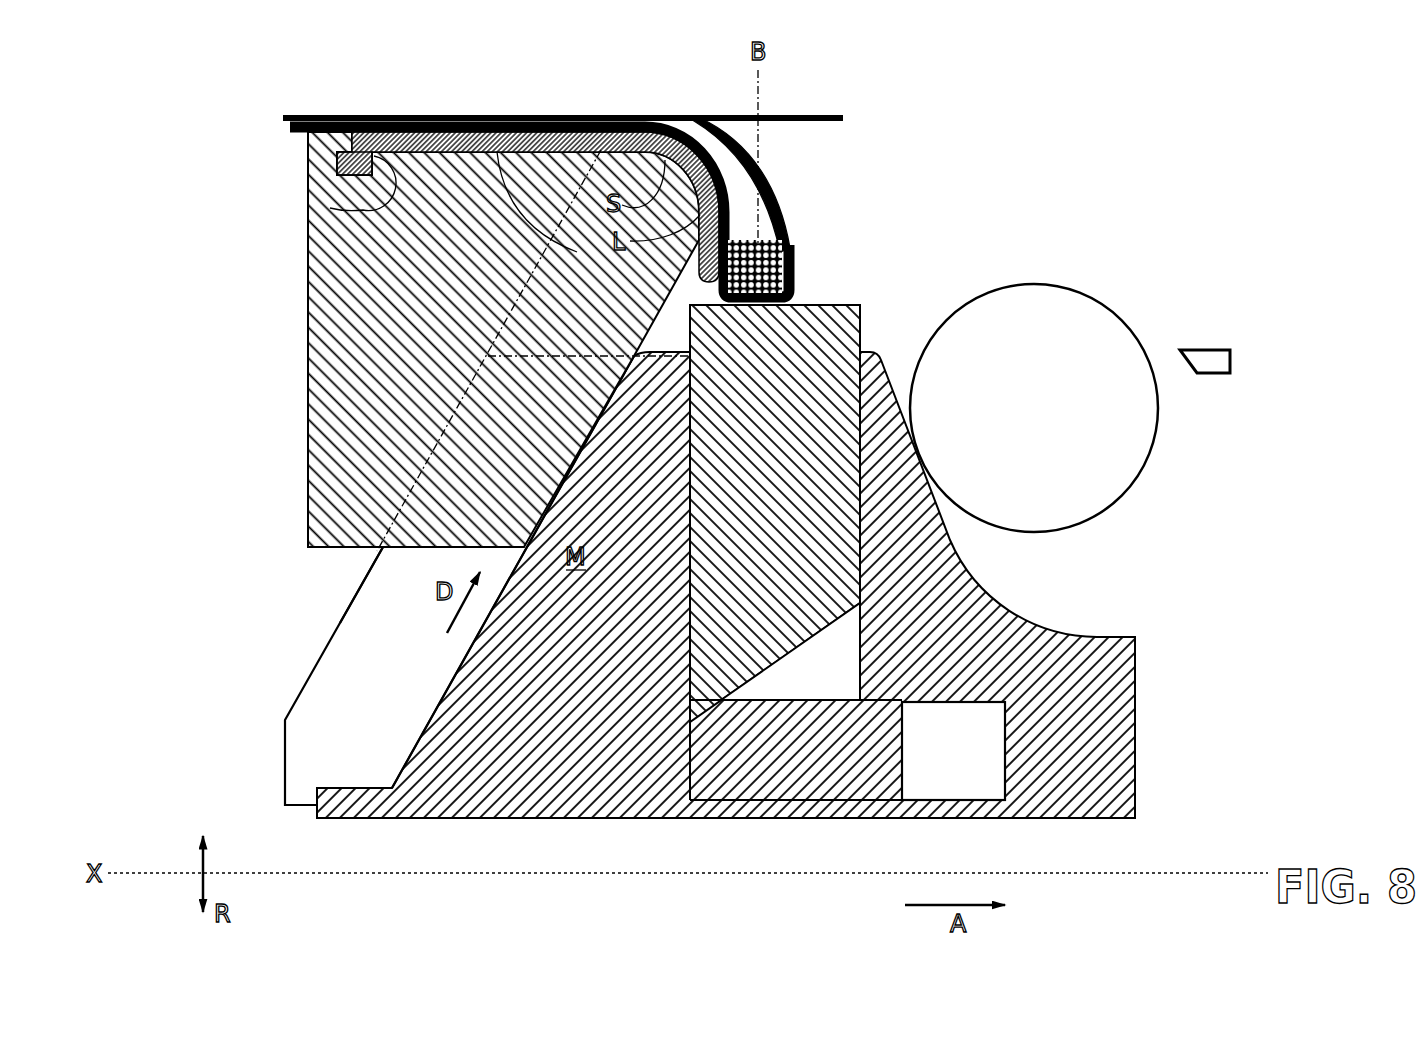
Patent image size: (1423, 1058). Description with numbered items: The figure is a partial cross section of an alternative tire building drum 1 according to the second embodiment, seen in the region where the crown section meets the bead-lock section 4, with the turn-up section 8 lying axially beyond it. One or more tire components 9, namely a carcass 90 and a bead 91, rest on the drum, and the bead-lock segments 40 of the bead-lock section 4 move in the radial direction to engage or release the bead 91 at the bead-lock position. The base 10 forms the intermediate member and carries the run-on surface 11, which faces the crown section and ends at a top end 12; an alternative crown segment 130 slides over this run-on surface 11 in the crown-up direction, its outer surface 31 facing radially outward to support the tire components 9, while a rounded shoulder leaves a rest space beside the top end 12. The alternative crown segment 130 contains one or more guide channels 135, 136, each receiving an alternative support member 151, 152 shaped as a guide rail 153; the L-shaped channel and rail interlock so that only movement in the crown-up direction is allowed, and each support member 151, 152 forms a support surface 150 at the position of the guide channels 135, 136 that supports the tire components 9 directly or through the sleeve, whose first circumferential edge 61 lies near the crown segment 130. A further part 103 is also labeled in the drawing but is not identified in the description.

The tire building drum 1 is at (1347, 98).
The bead-lock section 4 is at (858, 238).
The turn-up section 8 is at (1181, 238).
The tire components 9 is at (555, 114).
The base 10 is at (597, 800).
The run-on surface 11 is at (455, 668).
The top end 12 is at (660, 352).
The outer surface 31 is at (330, 208).
The bead-lock segments 40 is at (782, 608).
The first circumferential edge 61 is at (336, 173).
The carcass 90 is at (622, 118).
The bead 91 is at (777, 238).
The cable assembly 103 is at (786, 104).
The alternative crown segments 130 is at (332, 323).
The guide channel 135 is at (528, 171).
The guide channel 136 is at (497, 114).
The support surface 150 is at (640, 322).
The alternative support member 151 is at (252, 676).
The alternative support member 152 is at (310, 742).
The guide rail 153 is at (372, 600).